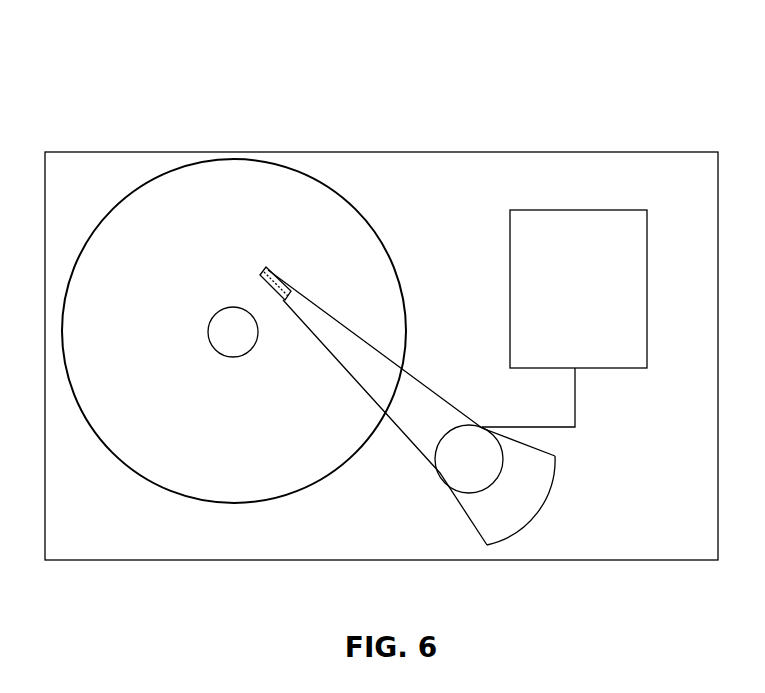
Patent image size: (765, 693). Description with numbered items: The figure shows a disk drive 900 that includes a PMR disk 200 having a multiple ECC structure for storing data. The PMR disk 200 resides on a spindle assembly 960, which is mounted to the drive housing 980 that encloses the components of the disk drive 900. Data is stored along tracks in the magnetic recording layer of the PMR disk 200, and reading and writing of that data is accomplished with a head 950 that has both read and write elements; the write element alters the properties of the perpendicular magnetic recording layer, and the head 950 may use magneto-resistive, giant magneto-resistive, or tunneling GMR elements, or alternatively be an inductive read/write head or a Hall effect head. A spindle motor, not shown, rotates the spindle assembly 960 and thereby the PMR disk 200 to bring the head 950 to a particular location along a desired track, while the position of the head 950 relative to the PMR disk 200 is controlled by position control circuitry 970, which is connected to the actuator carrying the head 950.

The disk drive 900 is at (636, 88).
The drive housing 980 is at (478, 151).
The PMR disk 200 is at (173, 497).
The spindle assembly 960 is at (215, 342).
The head 950 is at (278, 274).
The position control circuitry 970 is at (560, 298).